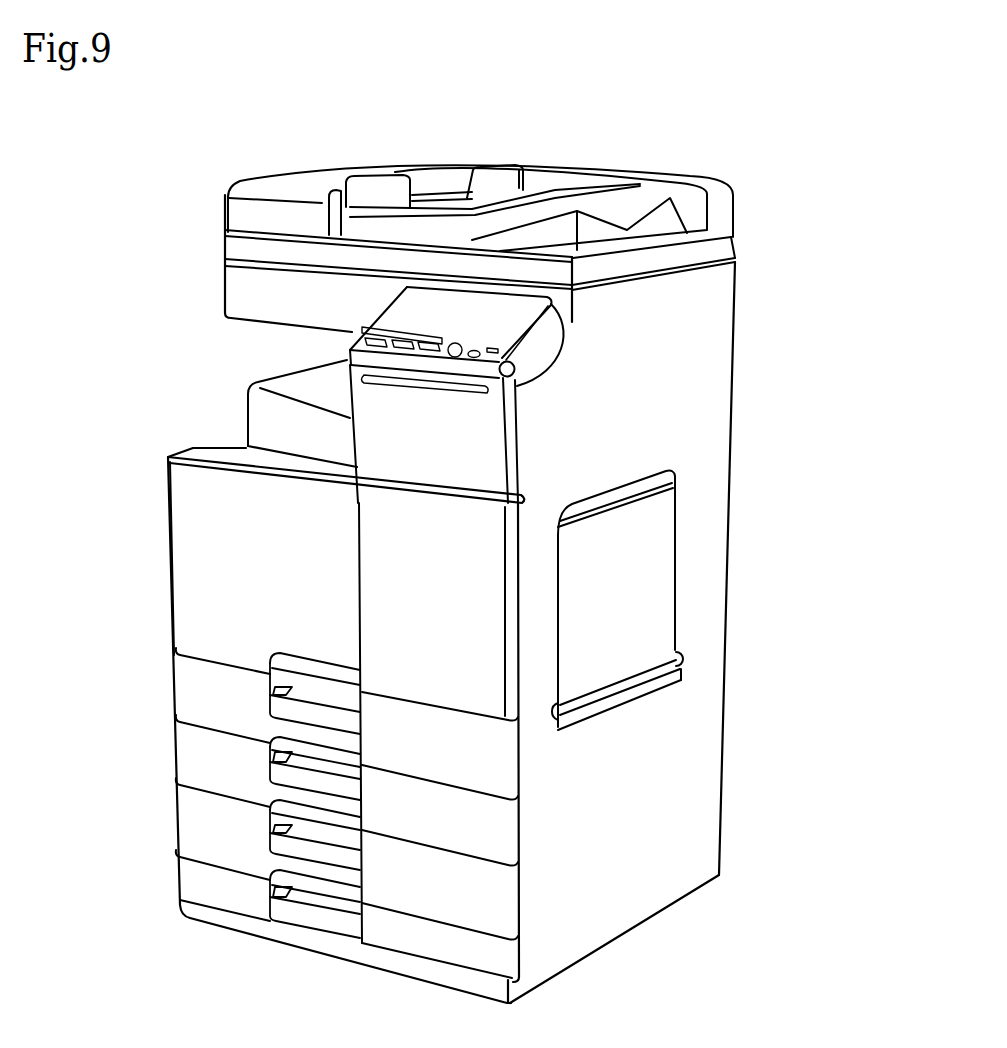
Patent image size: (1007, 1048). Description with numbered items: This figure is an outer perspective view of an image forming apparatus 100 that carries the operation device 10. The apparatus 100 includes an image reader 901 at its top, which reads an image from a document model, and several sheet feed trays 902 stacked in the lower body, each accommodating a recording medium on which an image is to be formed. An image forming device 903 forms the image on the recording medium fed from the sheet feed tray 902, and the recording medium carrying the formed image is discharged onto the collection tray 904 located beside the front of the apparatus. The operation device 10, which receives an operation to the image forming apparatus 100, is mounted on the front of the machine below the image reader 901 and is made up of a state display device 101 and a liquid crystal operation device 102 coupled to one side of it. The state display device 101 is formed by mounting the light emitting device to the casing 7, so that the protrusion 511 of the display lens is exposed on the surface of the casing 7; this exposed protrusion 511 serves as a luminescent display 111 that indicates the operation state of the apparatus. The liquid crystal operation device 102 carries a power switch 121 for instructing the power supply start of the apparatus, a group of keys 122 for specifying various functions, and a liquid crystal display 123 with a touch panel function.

The image forming apparatus 100 is at (630, 150).
The operation device 10 is at (372, 307).
The image reader 901 is at (360, 178).
The liquid crystal operation device 102 is at (357, 335).
The group of keys 122 is at (412, 323).
The liquid crystal display 123 is at (489, 322).
The power switch 121 is at (512, 335).
The casing 7 is at (398, 530).
The luminescent display 111 is at (407, 380).
The protrusion 511 is at (426, 421).
The state display device 101 is at (383, 472).
The collection tray 904 is at (292, 378).
The image forming device 903 is at (193, 582).
The sheet feed tray 902 is at (185, 702).